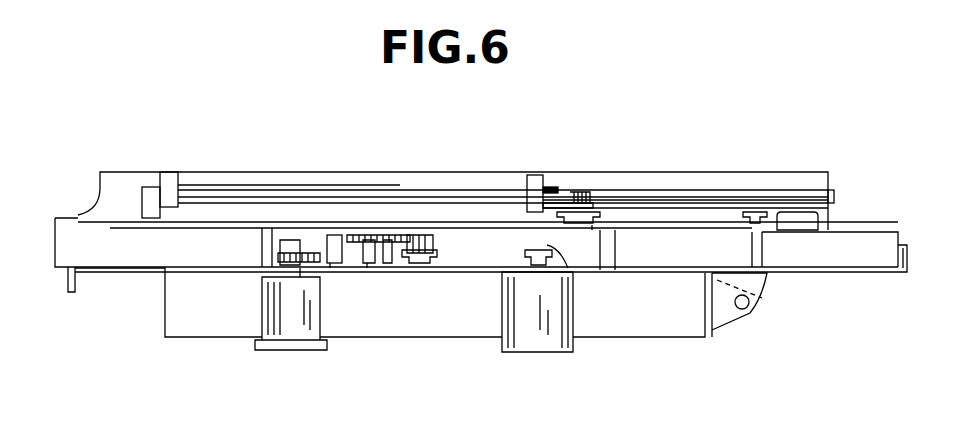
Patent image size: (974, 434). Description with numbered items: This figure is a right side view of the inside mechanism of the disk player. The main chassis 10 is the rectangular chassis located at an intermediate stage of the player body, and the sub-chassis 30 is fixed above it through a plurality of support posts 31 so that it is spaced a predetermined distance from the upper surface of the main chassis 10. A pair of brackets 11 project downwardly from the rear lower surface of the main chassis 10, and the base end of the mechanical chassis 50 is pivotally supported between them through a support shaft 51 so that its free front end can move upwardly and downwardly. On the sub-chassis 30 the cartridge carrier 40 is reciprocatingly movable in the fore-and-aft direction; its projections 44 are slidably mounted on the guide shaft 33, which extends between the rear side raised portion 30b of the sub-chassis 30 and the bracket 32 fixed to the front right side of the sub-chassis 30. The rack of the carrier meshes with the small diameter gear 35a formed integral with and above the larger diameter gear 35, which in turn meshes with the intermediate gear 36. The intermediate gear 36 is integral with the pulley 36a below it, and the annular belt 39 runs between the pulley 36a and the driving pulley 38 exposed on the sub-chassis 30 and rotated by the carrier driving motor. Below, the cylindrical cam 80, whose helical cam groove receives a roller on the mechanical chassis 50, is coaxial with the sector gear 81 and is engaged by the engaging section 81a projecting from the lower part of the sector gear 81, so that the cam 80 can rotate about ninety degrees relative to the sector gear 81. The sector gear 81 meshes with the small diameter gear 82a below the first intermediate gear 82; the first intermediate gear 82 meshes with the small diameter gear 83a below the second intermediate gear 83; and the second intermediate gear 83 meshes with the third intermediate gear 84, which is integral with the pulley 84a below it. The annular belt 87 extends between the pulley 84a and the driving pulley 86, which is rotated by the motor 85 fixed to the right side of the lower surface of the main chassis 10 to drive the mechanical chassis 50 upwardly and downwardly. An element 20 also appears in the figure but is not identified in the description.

The main chassis 10 is at (862, 275).
The bracket 11 is at (762, 293).
The tray 20 is at (878, 232).
The sub-chassis 30 is at (835, 215).
The rear side raised portion 30b is at (830, 185).
The support post 31 is at (260, 248).
The bracket 32 is at (147, 207).
The guide shaft 33 is at (690, 195).
The larger diameter gear 35 is at (568, 195).
The small diameter gear 35a is at (552, 188).
The intermediate gear 36 is at (592, 198).
The pulley 36a is at (592, 228).
The driving pulley 38 is at (764, 195).
The annular belt 39 is at (724, 195).
The cartridge carrier 40 is at (238, 172).
The projection 44 is at (167, 182).
The mechanical chassis 50 is at (457, 342).
The support shaft 51 is at (738, 307).
The cylindrical cam 80 is at (290, 333).
The sector gear 81 is at (290, 243).
The engaging section 81a is at (315, 285).
The first intermediate gear 82 is at (315, 240).
The small diameter gear 82a is at (343, 268).
The second intermediate gear 83 is at (378, 235).
The small diameter gear 83a is at (365, 268).
The third intermediate gear 84 is at (425, 243).
The pulley 84a is at (402, 268).
The motor 85 is at (537, 345).
The driving pulley 86 is at (568, 268).
The annular belt 87 is at (478, 268).